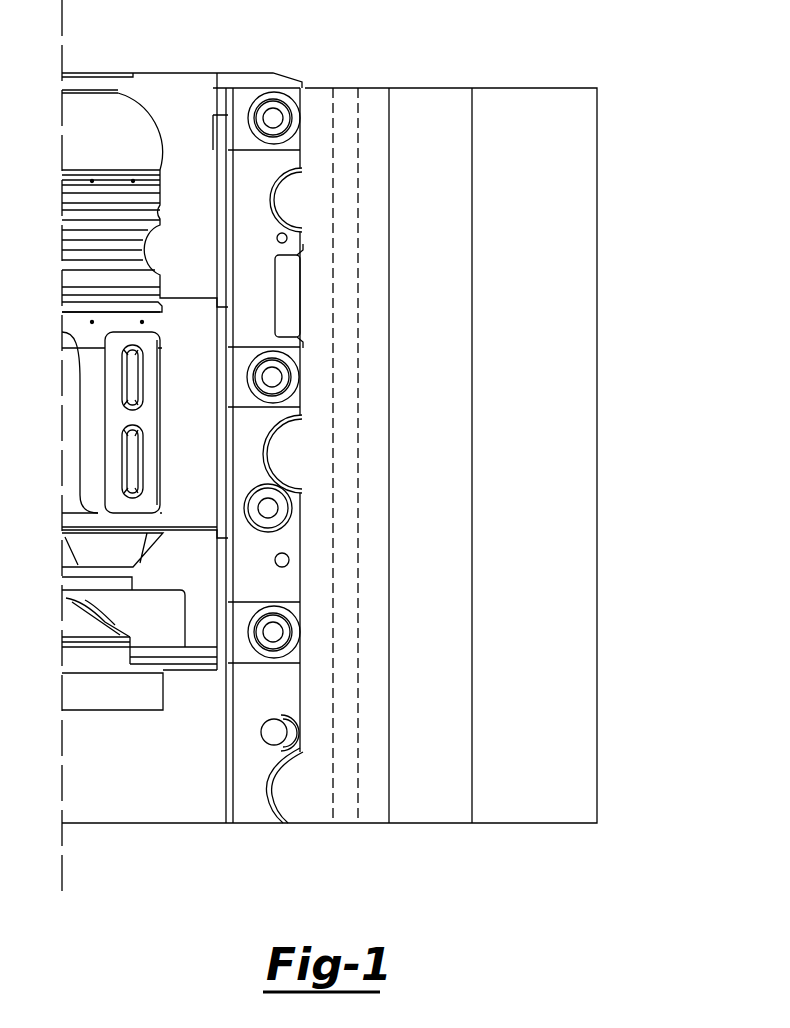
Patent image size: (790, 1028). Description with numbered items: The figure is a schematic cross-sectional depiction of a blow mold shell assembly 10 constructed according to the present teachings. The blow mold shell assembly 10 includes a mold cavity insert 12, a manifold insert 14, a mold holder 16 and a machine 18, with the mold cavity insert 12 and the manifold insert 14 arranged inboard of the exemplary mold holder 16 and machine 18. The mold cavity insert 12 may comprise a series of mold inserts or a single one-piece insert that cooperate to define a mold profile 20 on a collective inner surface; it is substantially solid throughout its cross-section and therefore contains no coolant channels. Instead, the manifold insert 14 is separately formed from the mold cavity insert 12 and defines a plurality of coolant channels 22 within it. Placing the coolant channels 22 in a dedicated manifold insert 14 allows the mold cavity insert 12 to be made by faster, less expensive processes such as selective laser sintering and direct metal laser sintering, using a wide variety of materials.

The blow mold shell assembly 10 is at (612, 208).
The mold cavity insert 12 is at (175, 88).
The manifold insert 14 is at (323, 95).
The mold holder 16 is at (417, 105).
The machine 18 is at (527, 97).
The mold profile 20 is at (158, 427).
The coolant channels 22 is at (345, 97).